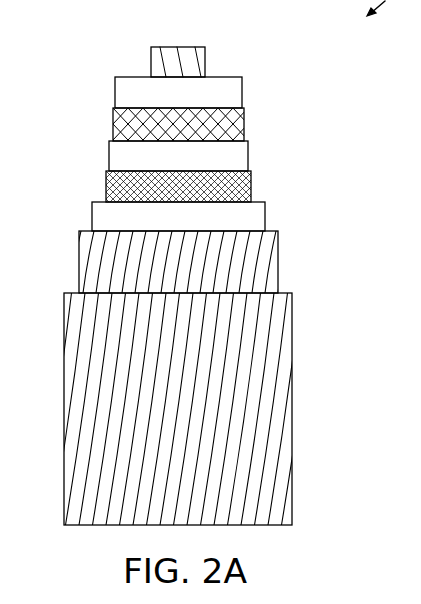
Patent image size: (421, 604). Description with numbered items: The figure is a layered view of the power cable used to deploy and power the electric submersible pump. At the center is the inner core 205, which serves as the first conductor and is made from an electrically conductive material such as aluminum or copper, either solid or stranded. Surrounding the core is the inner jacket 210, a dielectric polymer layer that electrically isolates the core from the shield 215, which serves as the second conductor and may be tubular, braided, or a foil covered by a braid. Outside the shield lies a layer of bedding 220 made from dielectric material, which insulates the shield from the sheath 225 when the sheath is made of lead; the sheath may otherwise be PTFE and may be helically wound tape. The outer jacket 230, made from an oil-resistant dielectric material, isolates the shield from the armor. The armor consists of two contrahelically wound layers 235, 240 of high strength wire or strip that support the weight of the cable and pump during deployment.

The inner core 205 is at (170, 47).
The inner jacket 210 is at (115, 90).
The shield 215 is at (113, 127).
The bedding 220 is at (109, 153).
The sheath 225 is at (251, 183).
The outer jacket 230 is at (265, 212).
The armor layer 235 is at (278, 255).
The armor layer 240 is at (292, 437).